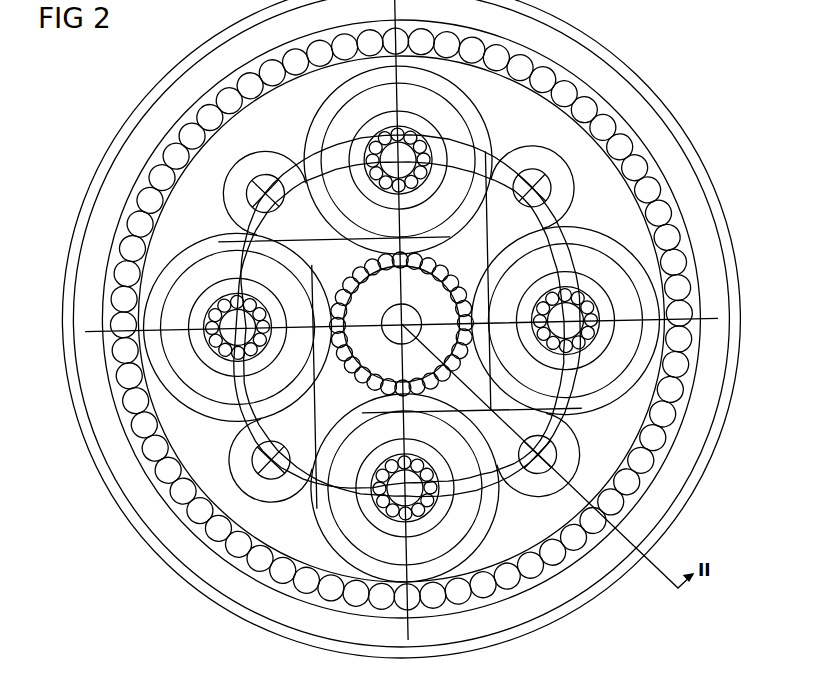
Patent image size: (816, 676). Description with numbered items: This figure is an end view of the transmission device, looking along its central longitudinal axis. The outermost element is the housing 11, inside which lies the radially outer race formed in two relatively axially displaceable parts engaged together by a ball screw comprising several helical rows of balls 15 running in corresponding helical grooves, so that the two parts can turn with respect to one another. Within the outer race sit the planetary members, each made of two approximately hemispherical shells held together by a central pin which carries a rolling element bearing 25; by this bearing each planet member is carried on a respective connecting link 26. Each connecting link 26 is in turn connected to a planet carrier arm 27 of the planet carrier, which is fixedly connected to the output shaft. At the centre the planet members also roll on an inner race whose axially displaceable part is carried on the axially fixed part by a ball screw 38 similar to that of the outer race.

The housing 11 is at (163, 562).
The balls 15 is at (132, 425).
The planet carrier arm 27 is at (128, 212).
The connecting link 26 is at (545, 160).
The rolling element bearing 25 is at (270, 282).
The ball screw 38 is at (442, 283).